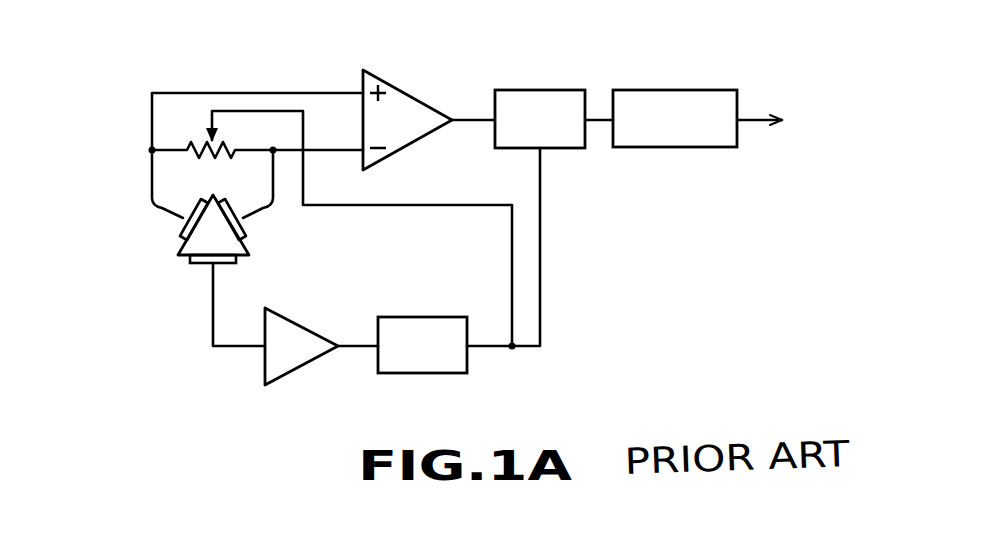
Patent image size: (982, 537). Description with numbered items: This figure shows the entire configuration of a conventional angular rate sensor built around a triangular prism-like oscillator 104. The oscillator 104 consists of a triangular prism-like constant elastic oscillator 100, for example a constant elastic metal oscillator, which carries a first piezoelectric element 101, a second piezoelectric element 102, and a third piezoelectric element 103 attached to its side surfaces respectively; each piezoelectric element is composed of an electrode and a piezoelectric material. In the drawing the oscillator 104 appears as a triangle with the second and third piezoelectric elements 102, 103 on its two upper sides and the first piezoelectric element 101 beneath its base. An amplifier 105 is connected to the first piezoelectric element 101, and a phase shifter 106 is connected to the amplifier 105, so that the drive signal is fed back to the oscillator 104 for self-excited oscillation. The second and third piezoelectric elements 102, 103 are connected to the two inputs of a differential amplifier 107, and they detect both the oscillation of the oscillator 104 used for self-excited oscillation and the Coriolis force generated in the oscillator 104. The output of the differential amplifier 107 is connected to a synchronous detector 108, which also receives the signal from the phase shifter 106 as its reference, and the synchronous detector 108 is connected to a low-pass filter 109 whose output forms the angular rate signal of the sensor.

The constant elastic oscillator 100 is at (182, 250).
The first piezoelectric element 101 is at (192, 265).
The second piezoelectric element 102 is at (180, 222).
The third piezoelectric element 103 is at (252, 230).
The oscillator 104 is at (212, 302).
The amplifier 105 is at (298, 320).
The phase shifter 106 is at (418, 317).
The differential amplifier 107 is at (405, 88).
The synchronous detector 108 is at (539, 90).
The low-pass filter 109 is at (673, 90).